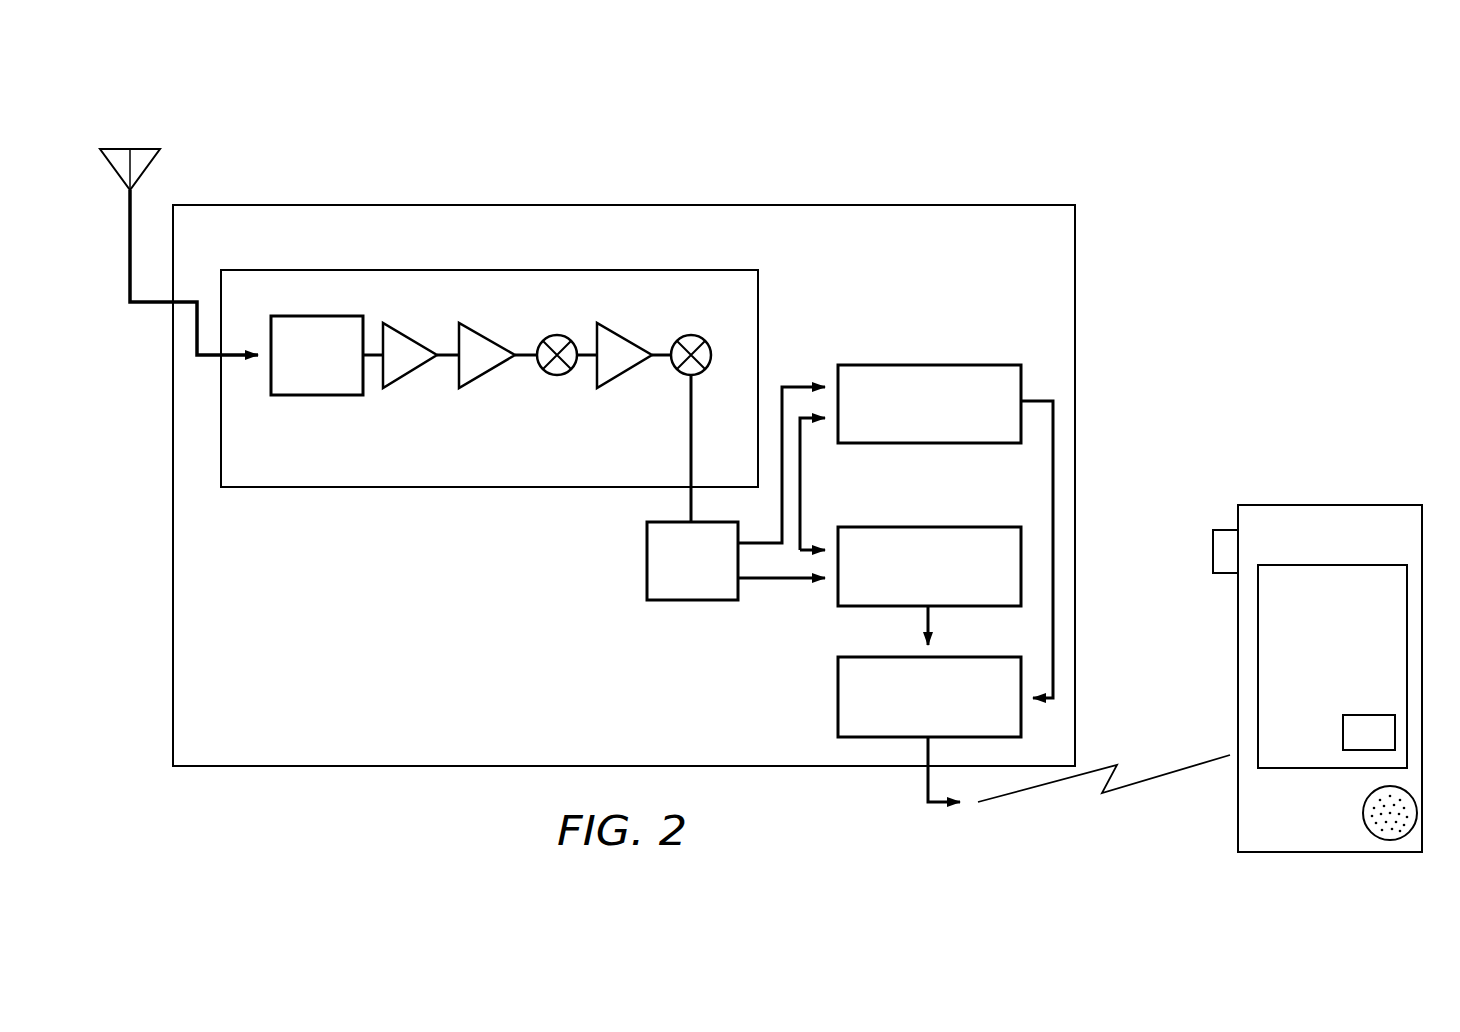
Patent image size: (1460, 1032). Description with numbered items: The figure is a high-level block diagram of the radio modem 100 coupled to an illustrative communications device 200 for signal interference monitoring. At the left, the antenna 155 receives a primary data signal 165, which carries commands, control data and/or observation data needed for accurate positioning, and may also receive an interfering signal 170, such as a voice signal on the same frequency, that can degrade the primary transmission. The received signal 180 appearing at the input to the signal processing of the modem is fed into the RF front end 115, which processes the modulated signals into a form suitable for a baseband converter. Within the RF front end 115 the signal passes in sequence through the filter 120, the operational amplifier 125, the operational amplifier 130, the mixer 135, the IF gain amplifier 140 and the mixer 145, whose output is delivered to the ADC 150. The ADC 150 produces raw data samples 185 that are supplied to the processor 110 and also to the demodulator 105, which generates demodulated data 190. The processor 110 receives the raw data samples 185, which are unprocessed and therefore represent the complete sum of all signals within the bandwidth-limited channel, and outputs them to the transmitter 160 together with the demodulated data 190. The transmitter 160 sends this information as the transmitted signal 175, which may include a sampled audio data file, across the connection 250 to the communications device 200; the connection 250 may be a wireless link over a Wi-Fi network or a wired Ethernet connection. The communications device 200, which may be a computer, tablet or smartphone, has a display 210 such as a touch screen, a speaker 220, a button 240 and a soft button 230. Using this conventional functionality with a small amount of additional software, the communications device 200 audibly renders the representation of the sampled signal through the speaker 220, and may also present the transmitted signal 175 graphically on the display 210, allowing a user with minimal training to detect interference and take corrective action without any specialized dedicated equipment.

The radio modem 100 is at (548, 205).
The demodulator 105 is at (927, 363).
The processor 110 is at (923, 525).
The RF front end 115 is at (473, 272).
The filter 120 is at (315, 396).
The operational amplifier 125 is at (397, 381).
The operational amplifier 130 is at (473, 381).
The mixer 135 is at (556, 376).
The IF gain amplifier 140 is at (617, 381).
The mixer 145 is at (690, 336).
The ADC 150 is at (647, 562).
The antenna 155 is at (150, 168).
The transmitter 160 is at (837, 696).
The data signal 165 is at (117, 148).
The interfering signal 170 is at (148, 148).
The transmitted signal 175 is at (927, 802).
The signal 180 is at (200, 362).
The raw data samples 185 is at (791, 582).
The demodulated data 190 is at (1052, 488).
The communications device 200 is at (1320, 505).
The display 210 is at (1330, 565).
The speaker 220 is at (1363, 813).
The soft button 230 is at (1372, 715).
The button 240 is at (1224, 530).
The connection 250 is at (1104, 795).